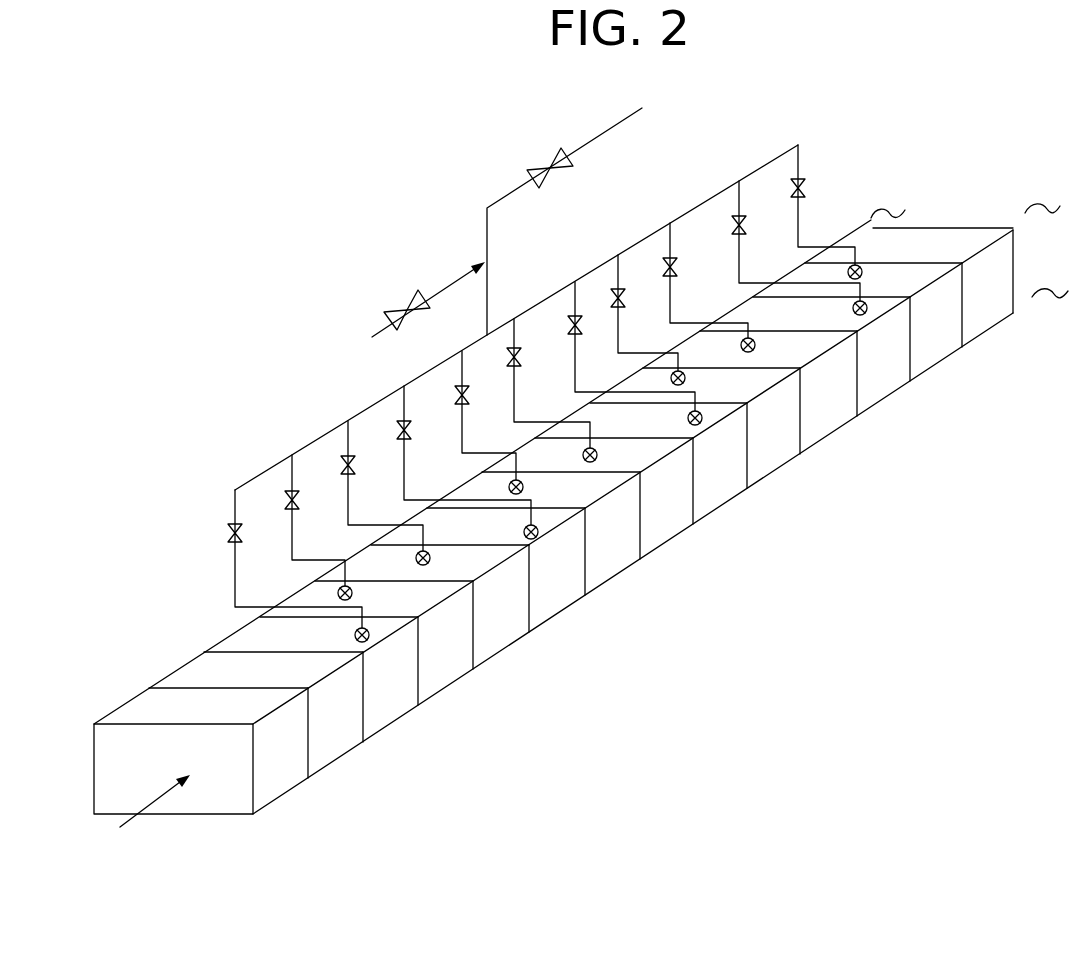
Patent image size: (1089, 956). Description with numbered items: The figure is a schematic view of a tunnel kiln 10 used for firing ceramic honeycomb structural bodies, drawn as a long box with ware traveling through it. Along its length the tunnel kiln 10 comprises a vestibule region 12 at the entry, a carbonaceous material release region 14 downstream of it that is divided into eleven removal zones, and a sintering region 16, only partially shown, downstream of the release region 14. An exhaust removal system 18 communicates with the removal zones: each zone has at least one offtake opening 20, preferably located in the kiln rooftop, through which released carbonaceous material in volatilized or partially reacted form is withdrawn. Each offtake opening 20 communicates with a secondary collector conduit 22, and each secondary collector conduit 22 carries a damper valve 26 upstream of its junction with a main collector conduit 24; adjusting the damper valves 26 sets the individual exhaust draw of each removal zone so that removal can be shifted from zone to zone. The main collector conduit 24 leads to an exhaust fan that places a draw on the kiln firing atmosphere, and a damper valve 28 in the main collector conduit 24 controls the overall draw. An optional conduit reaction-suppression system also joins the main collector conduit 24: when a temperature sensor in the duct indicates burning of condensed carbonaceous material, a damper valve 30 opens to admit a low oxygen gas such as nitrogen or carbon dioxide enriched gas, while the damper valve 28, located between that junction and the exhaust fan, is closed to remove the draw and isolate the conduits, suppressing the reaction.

The tunnel kiln 10 is at (570, 550).
The vestibule region 12 is at (237, 772).
The carbonaceous material release region 14 is at (438, 665).
The sintering region 16 is at (942, 333).
The exhaust removal system 18 is at (529, 386).
The offtake openings 20 is at (534, 540).
The secondary collector conduit 22 is at (236, 508).
The main collector conduit 24 is at (312, 444).
The damper valve 26 is at (547, 386).
The damper valve 28 is at (542, 160).
The damper valve 30 is at (384, 310).